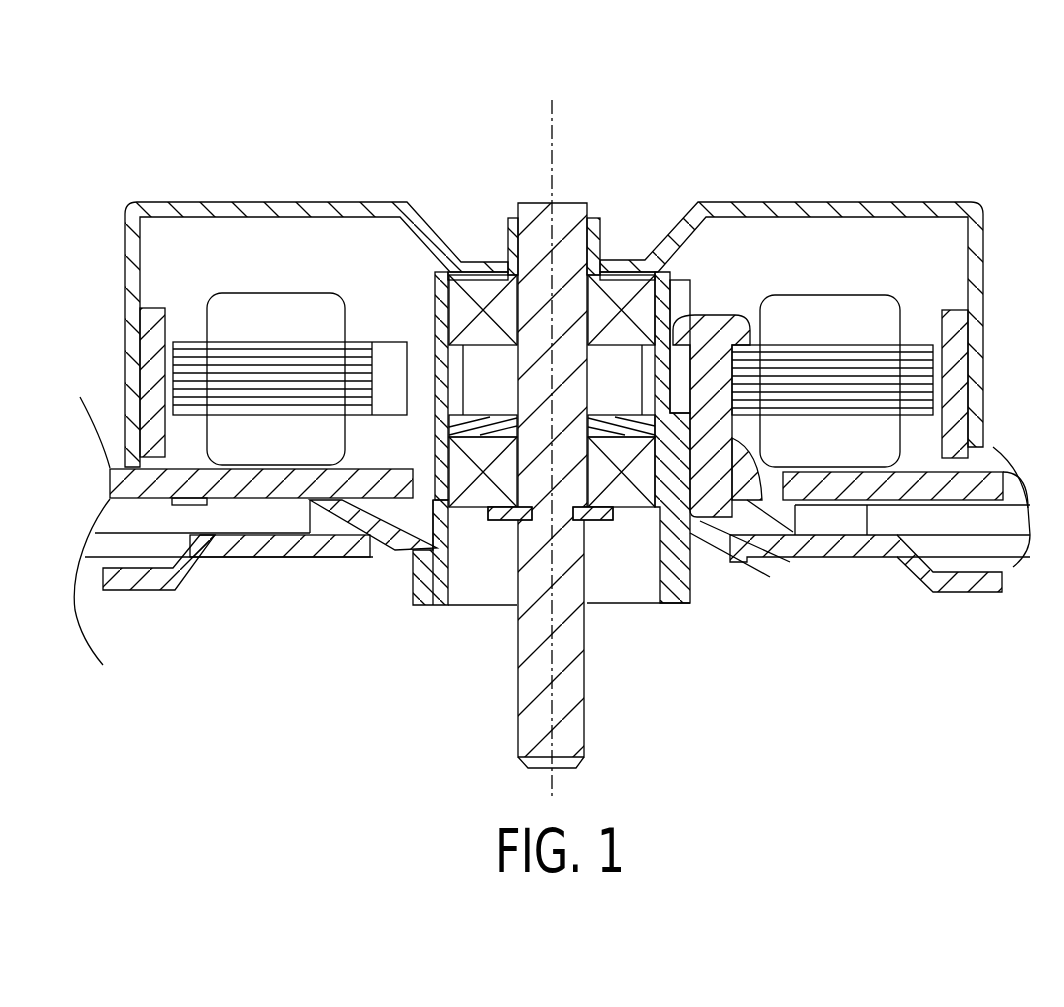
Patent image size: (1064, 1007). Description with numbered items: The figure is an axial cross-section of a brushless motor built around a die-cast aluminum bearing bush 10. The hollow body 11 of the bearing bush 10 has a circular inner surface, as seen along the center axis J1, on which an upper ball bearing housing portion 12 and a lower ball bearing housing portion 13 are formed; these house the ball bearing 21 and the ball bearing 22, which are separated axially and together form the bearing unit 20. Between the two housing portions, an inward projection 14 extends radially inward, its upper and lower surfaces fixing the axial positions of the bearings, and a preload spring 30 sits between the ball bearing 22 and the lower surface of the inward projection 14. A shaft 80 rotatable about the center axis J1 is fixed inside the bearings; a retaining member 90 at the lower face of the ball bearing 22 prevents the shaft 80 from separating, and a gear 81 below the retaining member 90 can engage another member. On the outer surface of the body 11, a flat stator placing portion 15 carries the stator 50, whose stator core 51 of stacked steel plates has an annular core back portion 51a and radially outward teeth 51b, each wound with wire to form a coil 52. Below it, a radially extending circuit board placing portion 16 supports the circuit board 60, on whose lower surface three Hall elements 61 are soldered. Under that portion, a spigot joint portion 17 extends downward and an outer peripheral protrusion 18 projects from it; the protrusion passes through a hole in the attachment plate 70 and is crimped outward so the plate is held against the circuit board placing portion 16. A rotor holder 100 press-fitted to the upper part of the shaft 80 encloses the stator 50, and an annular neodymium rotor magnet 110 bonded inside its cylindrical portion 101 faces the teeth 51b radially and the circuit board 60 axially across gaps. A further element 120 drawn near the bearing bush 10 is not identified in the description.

The rotor holder 100 is at (307, 195).
The cylindrical portion 101 is at (130, 258).
The rotor magnet 110 is at (152, 350).
The bearing bush 10 is at (406, 423).
The hollow body 11 is at (438, 240).
The ball bearing housing portion 12 is at (448, 330).
The ball bearing housing portion 13 is at (396, 500).
The inward projection 14 is at (633, 370).
The stator placing portion 15 is at (700, 553).
The circuit board placing portion 16 is at (770, 520).
The spigot joint portion 17 is at (685, 517).
The outer peripheral protrusion 18 is at (742, 563).
The bearing unit 20 is at (808, 460).
The ball bearing 21 is at (483, 263).
The ball bearing 22 is at (473, 505).
The preload spring 30 is at (449, 437).
The stator 50 is at (606, 255).
The stator core 51 is at (870, 347).
The core back portion 51a is at (752, 345).
The teeth 51b is at (930, 300).
The coil 52 is at (794, 317).
The circuit board 60 is at (867, 480).
The Hall elements 61 is at (197, 505).
The attachment plate 70 is at (960, 593).
The shaft 80 is at (489, 411).
The gear 81 is at (537, 728).
The retaining member 90 is at (503, 518).
The bearing bracket 120 is at (717, 317).
The center axis J1 is at (555, 140).